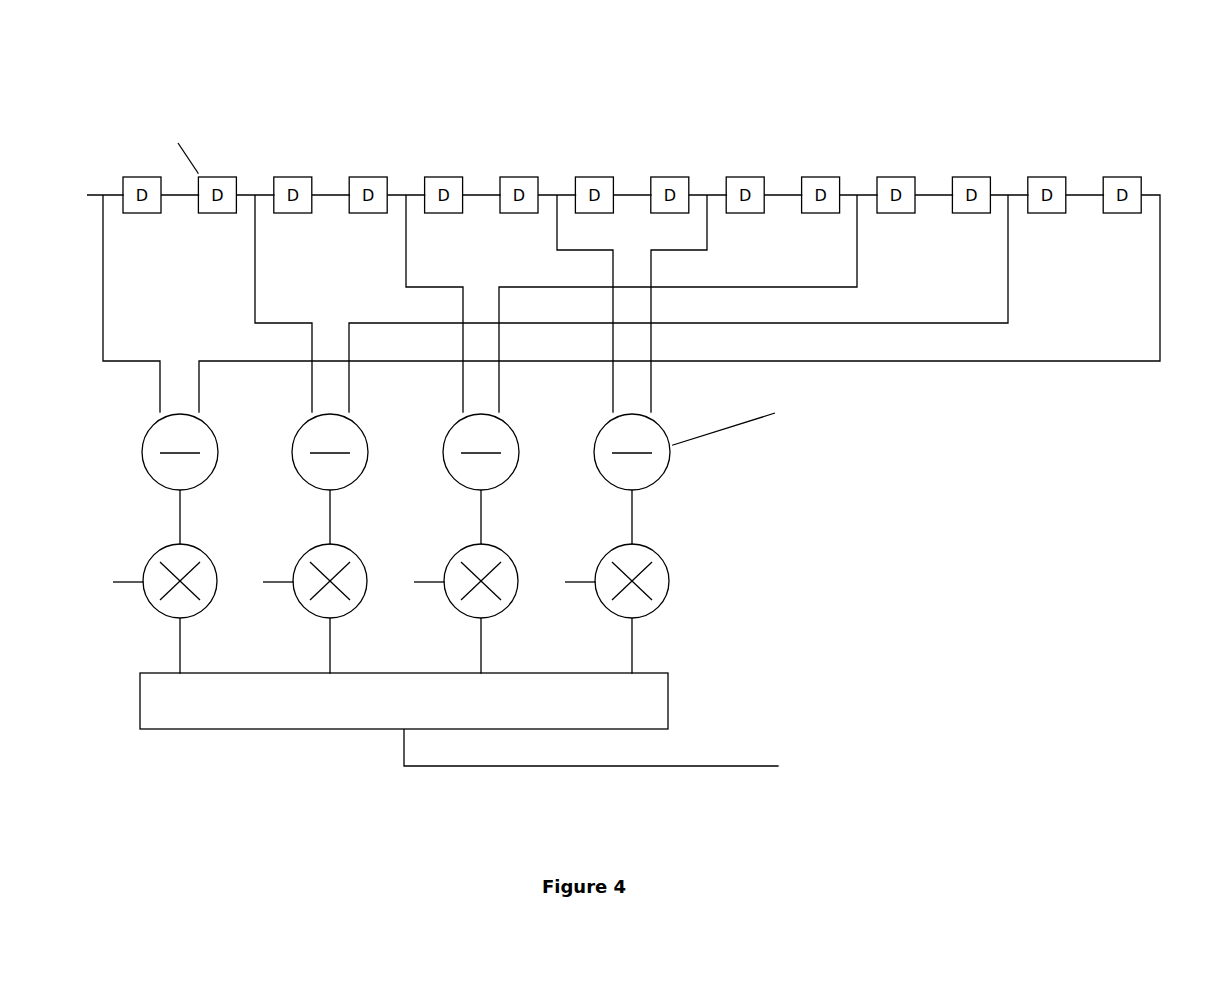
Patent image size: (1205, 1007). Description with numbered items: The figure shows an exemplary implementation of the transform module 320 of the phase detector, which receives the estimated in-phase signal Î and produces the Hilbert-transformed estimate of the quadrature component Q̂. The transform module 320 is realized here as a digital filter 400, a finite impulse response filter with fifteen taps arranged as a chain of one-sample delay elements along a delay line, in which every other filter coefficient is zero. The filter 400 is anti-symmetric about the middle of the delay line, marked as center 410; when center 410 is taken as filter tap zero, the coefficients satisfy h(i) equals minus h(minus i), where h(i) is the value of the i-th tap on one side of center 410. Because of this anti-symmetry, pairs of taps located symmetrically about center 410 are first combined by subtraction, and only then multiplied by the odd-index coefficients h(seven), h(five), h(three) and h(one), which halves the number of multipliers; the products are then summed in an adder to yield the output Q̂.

The transform module 320 is at (137, 65).
The digital filter 400 is at (476, 122).
The center 410 is at (628, 190).